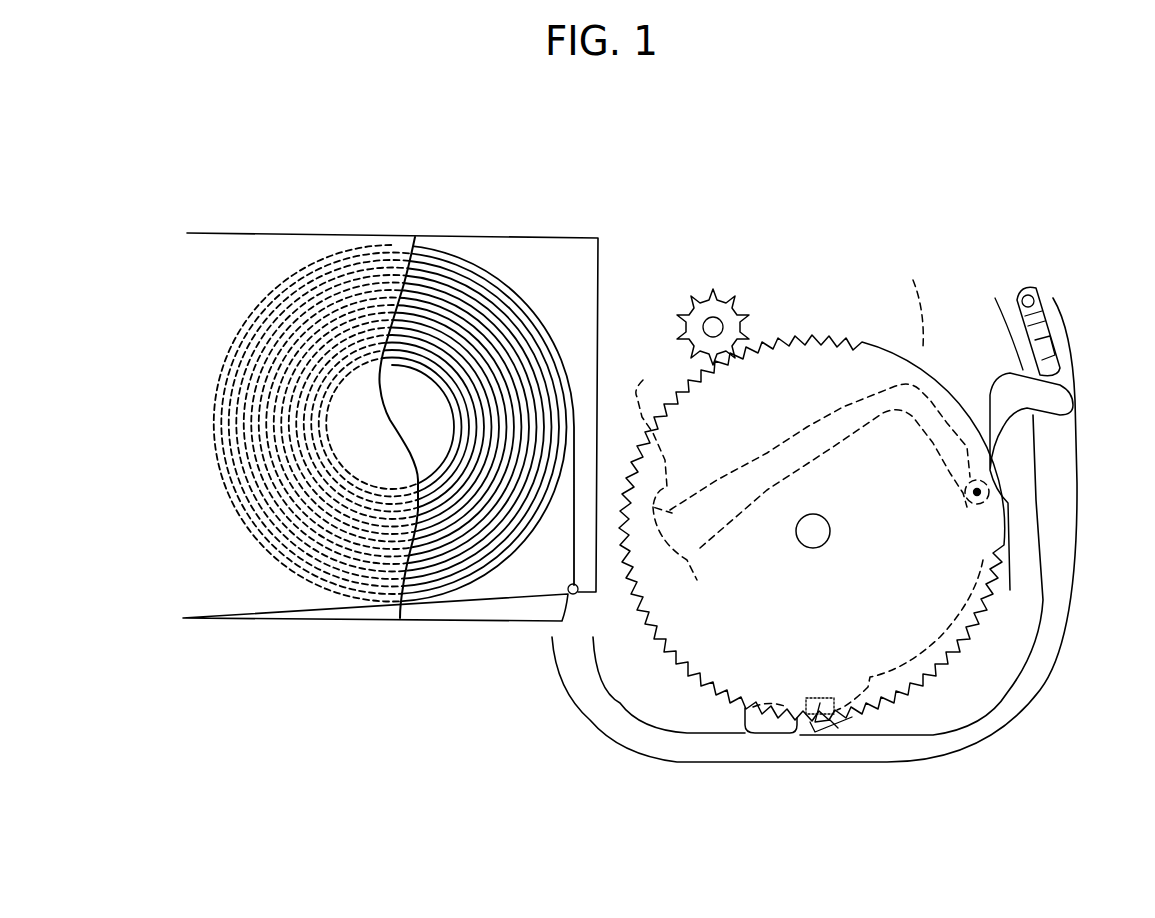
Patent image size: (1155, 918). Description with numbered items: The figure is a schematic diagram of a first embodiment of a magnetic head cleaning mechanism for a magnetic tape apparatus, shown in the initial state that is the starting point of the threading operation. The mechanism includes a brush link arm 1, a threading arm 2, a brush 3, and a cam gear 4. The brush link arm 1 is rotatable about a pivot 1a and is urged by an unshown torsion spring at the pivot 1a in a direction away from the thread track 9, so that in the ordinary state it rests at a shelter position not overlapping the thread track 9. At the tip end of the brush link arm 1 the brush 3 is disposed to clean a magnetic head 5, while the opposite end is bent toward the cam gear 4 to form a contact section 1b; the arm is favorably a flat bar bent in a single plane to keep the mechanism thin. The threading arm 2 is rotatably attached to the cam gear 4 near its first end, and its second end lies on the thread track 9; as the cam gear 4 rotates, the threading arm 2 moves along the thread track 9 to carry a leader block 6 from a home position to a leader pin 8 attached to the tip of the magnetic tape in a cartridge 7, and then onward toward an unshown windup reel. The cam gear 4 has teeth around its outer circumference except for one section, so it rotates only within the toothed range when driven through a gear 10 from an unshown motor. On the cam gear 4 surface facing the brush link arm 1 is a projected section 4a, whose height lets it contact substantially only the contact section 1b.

The brush link arm 1 is at (863, 343).
The pivot 1a is at (697, 558).
The contact section 1b is at (654, 433).
The threading arm 2 is at (990, 403).
The brush 3 is at (825, 697).
The cam gear 4 is at (800, 360).
The projected section 4a is at (915, 302).
The magnetic head 5 is at (743, 710).
The leader block 6 is at (1033, 340).
The cartridge 7 is at (532, 237).
The leader pin 8 is at (568, 588).
The thread track 9 is at (893, 750).
The gear 10 is at (690, 312).